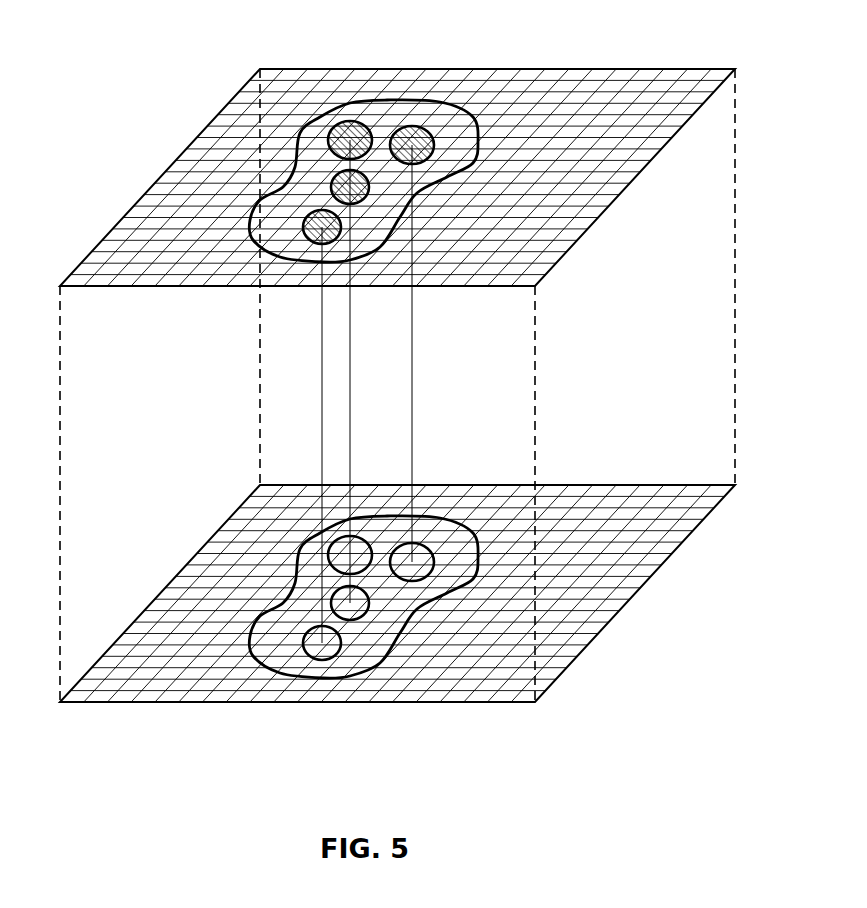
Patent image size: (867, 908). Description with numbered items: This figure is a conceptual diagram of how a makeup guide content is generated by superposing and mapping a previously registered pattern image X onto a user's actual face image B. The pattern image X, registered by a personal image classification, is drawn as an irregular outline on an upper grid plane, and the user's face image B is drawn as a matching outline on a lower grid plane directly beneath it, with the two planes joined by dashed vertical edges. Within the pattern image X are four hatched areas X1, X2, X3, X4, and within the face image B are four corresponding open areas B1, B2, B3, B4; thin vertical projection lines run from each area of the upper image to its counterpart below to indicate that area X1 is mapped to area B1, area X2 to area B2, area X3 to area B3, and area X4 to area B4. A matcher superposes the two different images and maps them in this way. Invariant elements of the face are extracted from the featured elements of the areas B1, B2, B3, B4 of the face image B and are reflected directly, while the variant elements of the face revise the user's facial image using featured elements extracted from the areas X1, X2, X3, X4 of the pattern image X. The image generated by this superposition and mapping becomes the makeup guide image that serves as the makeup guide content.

The pattern image X is at (462, 98).
The area of the pattern image X1 is at (352, 120).
The area of the pattern image X2 is at (412, 125).
The area of the pattern image X3 is at (331, 187).
The area of the pattern image X4 is at (303, 226).
The user's face image B is at (483, 567).
The area of the user's face image B1 is at (360, 565).
The area of the user's face image B2 is at (415, 568).
The area of the user's face image B3 is at (355, 610).
The area of the user's face image B4 is at (312, 652).